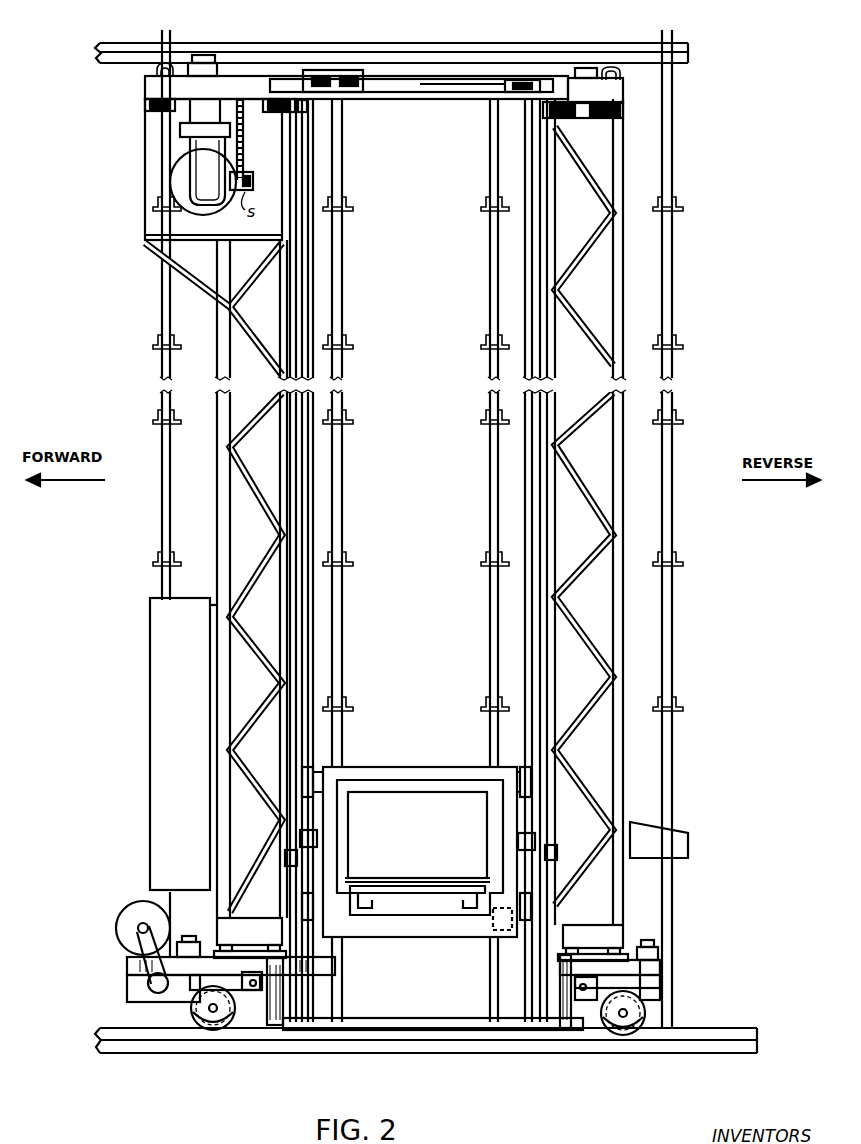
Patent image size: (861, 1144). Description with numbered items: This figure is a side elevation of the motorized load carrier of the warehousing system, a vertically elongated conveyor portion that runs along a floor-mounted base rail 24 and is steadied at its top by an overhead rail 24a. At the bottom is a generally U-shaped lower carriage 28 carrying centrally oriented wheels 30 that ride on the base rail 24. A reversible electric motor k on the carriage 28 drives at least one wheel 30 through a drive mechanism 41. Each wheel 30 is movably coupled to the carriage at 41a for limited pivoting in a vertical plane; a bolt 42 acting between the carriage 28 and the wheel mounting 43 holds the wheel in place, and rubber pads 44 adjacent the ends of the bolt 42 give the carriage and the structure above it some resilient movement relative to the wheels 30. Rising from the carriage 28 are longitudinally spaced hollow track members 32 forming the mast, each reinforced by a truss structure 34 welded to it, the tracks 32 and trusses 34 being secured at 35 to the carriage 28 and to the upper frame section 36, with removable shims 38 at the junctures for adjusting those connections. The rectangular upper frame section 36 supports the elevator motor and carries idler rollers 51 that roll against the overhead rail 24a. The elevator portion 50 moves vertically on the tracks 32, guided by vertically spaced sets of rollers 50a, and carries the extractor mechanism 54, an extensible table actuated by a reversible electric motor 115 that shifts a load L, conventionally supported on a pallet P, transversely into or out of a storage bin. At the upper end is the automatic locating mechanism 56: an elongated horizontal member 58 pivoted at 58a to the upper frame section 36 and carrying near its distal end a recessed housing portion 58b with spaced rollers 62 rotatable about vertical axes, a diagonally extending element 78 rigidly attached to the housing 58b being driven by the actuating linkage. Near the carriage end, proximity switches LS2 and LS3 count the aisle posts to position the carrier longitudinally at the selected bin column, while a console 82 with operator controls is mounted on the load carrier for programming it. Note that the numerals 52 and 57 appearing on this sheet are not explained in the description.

The base rail 24 is at (757, 1040).
The overhead rail 24a is at (688, 56).
The lower carriage 28 is at (468, 1032).
The wheels 30 is at (214, 1030).
The track members 32 is at (315, 520).
The truss structure 34 is at (228, 500).
The securing connection 35 is at (153, 110).
The upper frame section 36 is at (493, 88).
The shims 38 is at (148, 103).
The drive mechanism 41 is at (140, 945).
The wheel coupling 41a is at (272, 1030).
The bolt 42 is at (172, 893).
The wheel mounting 43 is at (238, 1010).
The rubber pads 44 is at (152, 975).
The elevator portion 50 is at (417, 834).
The rollers 50a is at (312, 768).
The idler rollers 51 is at (212, 55).
The inner guide rail 52 is at (302, 472).
The extractor mechanism 54 is at (438, 882).
The automatic locating mechanism 56 is at (533, 453).
The end block 57 is at (598, 60).
The elongated member 58 is at (445, 80).
The pivotal connection 58a is at (540, 88).
The housing portion 58b is at (322, 78).
The rollers 62 is at (306, 107).
The diagonally extending element 78 is at (283, 80).
The console 82 is at (650, 825).
The reversible electric motor 115 is at (497, 930).
The load L is at (430, 795).
The pallet P is at (365, 882).
The reversible electric motor k is at (140, 928).
The proximity switch LS2 is at (285, 857).
The proximity switch LS3 is at (557, 853).